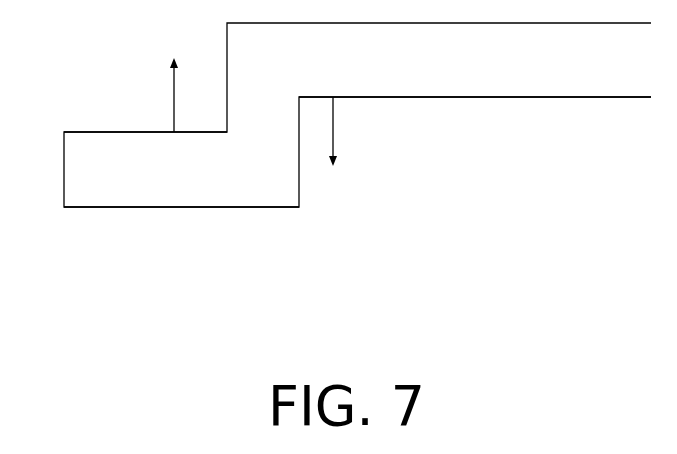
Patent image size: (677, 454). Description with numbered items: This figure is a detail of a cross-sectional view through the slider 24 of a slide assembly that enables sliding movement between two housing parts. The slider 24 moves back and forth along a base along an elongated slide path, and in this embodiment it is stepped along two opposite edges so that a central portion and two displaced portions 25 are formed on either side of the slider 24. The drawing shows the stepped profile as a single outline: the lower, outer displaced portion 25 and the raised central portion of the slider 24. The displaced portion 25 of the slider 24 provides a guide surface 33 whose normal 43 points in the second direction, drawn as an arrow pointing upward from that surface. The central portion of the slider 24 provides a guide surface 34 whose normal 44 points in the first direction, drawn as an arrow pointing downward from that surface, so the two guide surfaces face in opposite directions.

The slider 24 is at (571, 75).
The displaced portion 25 is at (160, 192).
The guide surface 33 is at (108, 132).
The guide surface 34 is at (383, 97).
The normal 43 is at (174, 93).
The normal 44 is at (333, 135).